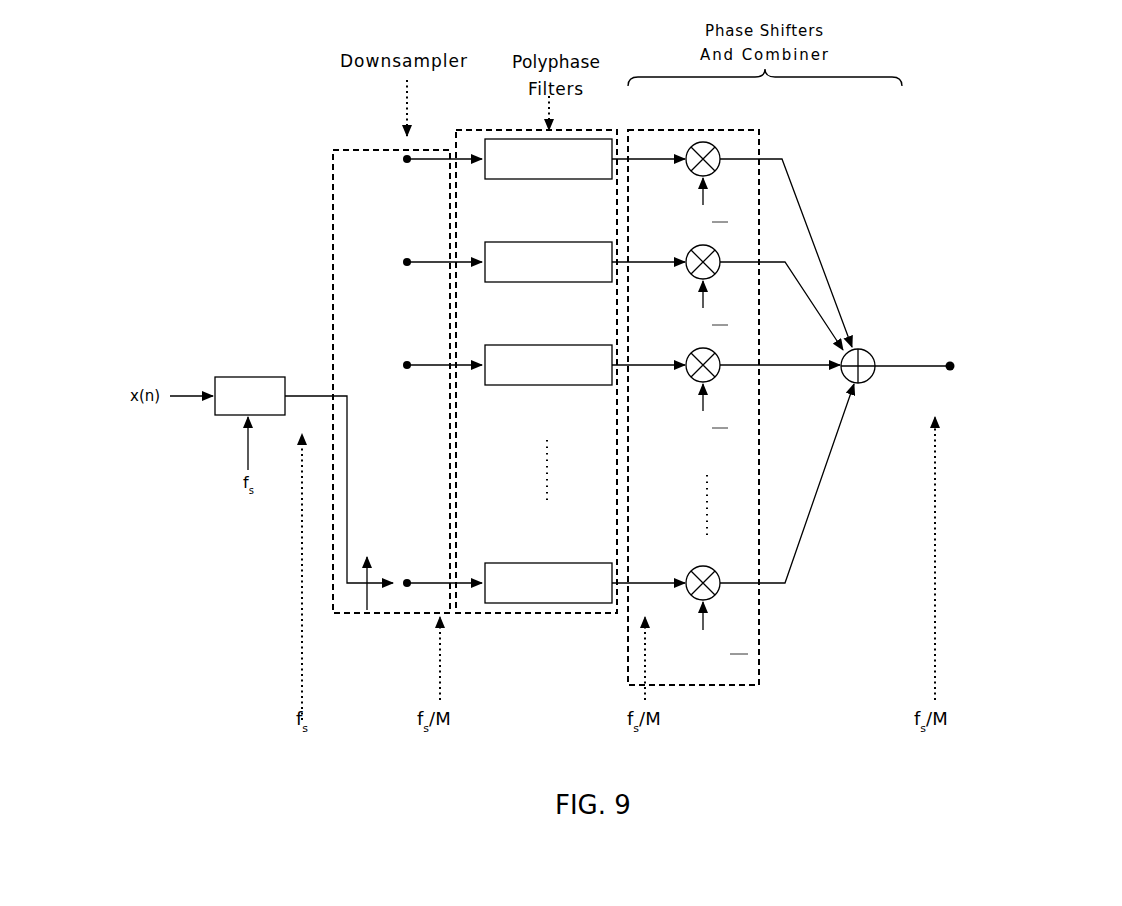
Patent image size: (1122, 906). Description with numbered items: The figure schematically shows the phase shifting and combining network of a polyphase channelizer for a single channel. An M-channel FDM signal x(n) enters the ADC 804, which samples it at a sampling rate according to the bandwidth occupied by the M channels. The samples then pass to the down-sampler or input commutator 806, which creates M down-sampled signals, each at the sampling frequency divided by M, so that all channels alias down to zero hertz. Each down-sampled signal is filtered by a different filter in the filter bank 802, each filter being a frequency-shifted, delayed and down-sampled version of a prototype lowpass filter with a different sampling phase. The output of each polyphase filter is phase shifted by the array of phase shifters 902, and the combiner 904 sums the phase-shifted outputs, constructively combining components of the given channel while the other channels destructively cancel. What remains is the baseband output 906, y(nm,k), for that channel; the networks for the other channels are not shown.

The filter bank 802 is at (537, 128).
The ADC 804 is at (237, 377).
The down-sampler or input commutator 806 is at (332, 165).
The array of phase shifters 902 is at (759, 148).
The combiner 904 is at (868, 349).
The baseband output 906 is at (952, 360).